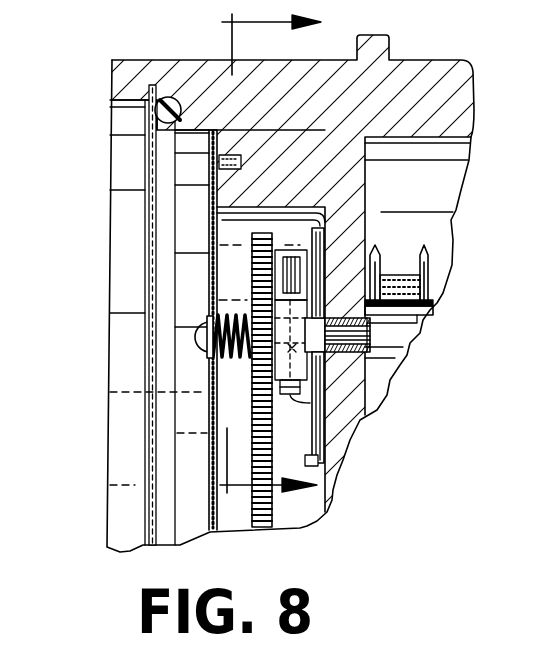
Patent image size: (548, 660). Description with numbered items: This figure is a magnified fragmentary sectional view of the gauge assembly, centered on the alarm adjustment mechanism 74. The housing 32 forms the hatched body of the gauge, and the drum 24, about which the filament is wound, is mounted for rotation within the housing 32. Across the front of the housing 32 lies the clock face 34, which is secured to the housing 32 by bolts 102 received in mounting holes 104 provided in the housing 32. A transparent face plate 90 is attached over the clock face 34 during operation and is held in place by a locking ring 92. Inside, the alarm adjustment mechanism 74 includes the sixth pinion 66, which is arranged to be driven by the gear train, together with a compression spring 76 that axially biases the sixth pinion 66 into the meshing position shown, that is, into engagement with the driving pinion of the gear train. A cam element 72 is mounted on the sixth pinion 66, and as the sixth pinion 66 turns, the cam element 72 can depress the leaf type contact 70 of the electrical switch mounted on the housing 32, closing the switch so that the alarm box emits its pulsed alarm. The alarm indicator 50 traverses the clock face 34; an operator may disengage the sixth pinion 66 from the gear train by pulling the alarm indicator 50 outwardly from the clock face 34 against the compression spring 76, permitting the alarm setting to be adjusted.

The housing 32 is at (193, 58).
The transparent face plate 90 is at (147, 158).
The locking ring 92 is at (148, 104).
The clock face 34 is at (209, 243).
The mounting holes 104 is at (285, 210).
The bolts 102 is at (241, 160).
The compression spring 76 is at (230, 358).
The alarm adjustment mechanism 74 is at (200, 310).
The alarm indicator 50 is at (205, 392).
The leaf type contact 70 is at (345, 397).
The sixth pinion 66 is at (272, 420).
The cam element 72 is at (367, 376).
The drum 24 is at (428, 248).